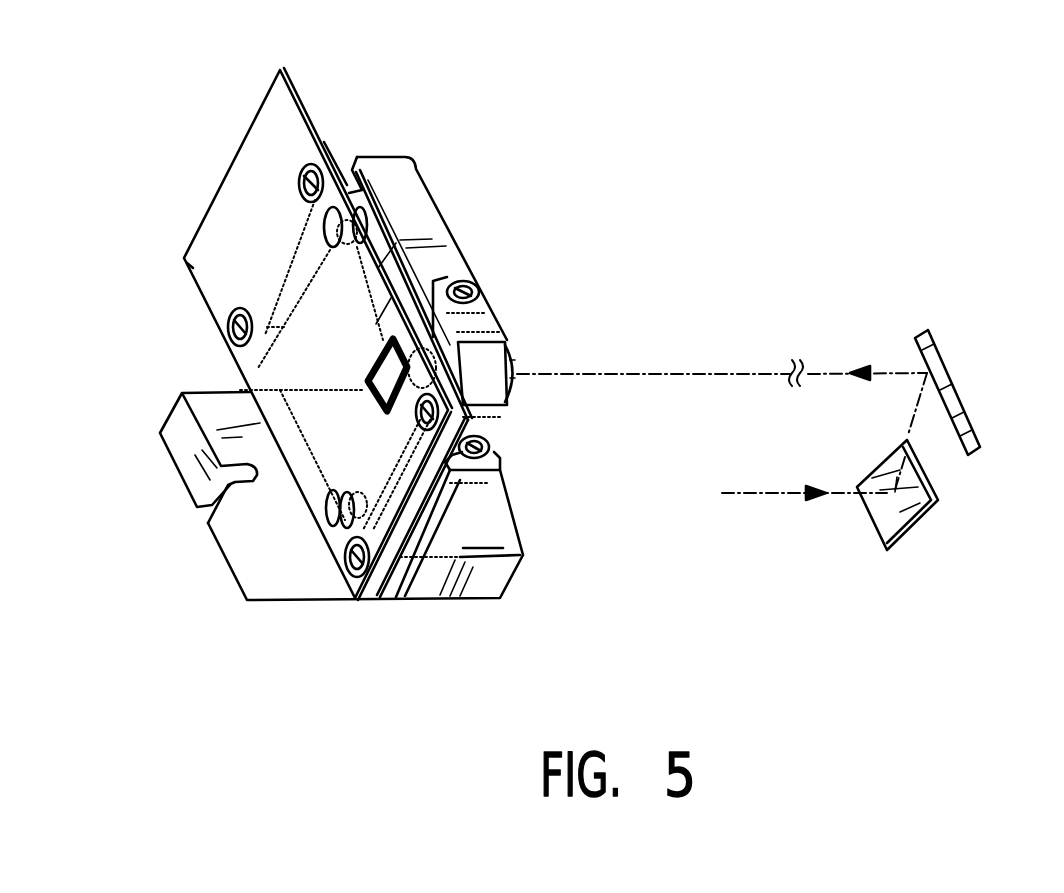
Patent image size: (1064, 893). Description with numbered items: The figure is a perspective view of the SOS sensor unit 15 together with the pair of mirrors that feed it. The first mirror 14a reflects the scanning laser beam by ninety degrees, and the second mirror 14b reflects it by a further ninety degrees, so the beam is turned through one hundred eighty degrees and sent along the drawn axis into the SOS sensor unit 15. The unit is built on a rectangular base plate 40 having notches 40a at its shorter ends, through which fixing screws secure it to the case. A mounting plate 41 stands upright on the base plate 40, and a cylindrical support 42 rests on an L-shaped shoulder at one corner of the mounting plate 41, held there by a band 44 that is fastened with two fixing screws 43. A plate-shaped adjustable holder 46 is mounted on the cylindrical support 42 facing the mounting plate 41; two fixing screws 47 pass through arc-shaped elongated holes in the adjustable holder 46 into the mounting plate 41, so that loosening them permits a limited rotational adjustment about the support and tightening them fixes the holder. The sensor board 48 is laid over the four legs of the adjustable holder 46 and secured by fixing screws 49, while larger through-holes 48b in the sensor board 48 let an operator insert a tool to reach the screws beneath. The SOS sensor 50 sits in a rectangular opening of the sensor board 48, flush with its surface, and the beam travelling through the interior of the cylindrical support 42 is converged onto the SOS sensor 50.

The SOS sensor unit 15 is at (571, 160).
The base plate 40 is at (500, 533).
The notch 40a is at (199, 505).
The mounting plate 41 is at (433, 575).
The cylindrical support 42 is at (516, 380).
The fixing screw 43 is at (473, 287).
The band 44 is at (500, 318).
The adjustable holder 46 is at (397, 223).
The fixing screw 47 is at (347, 365).
The sensor board 48 is at (292, 120).
The through-hole 48b is at (325, 228).
The fixing screw 49 is at (300, 182).
The SOS sensor 50 is at (373, 374).
The first mirror 14a is at (900, 512).
The second mirror 14b is at (953, 378).